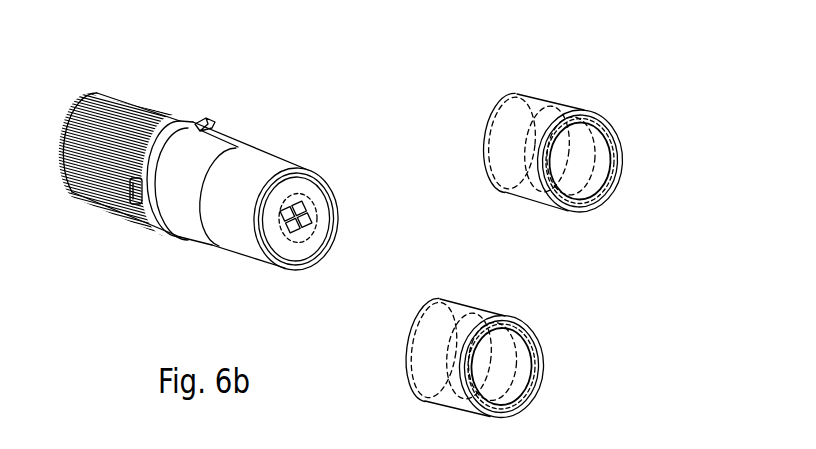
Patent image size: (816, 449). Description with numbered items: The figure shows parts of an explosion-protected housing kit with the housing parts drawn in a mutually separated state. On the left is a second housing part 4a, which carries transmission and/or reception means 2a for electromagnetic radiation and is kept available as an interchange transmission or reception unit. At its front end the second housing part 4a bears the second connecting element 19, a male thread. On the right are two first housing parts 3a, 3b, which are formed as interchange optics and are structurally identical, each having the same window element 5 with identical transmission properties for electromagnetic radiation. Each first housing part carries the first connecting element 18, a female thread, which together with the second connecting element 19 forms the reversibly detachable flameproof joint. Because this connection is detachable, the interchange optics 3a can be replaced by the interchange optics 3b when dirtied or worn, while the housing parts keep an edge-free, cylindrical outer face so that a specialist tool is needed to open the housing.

The second housing part 4a is at (132, 100).
The second connecting element 19 is at (258, 167).
The transmission and/or reception means 2a is at (306, 195).
The first connecting element 18 is at (509, 110).
The first housing part 3b is at (553, 108).
The first housing part 3a is at (478, 317).
The window element 5 is at (603, 111).